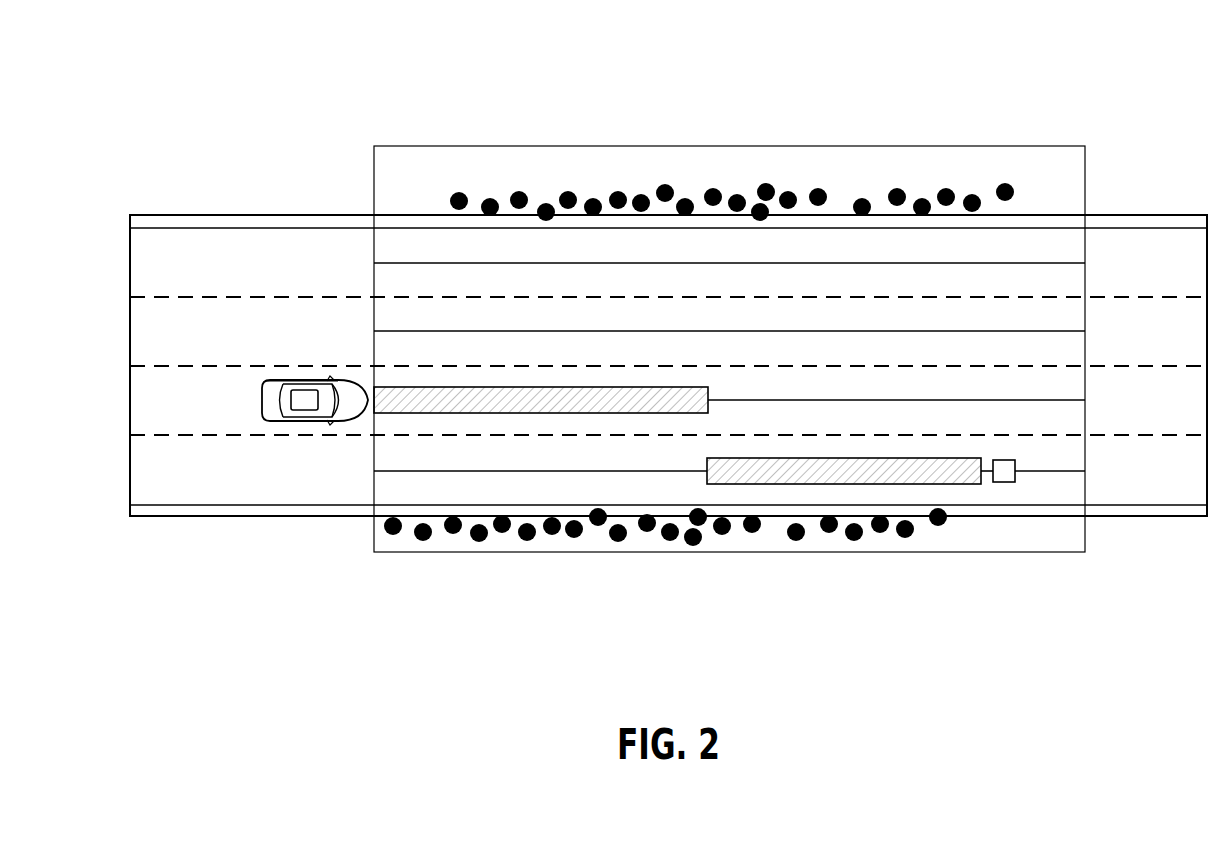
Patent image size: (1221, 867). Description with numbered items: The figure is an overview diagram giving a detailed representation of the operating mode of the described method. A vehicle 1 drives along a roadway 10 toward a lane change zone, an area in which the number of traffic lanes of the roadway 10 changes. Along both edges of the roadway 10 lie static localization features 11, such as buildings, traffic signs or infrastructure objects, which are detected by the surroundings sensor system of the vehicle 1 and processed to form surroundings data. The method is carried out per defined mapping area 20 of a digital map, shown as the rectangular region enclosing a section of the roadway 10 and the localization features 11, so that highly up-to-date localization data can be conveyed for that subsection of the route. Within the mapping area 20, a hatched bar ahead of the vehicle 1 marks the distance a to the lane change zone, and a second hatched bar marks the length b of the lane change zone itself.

The vehicle 1 is at (262, 398).
The roadway 10 is at (1173, 215).
The localization features 11 is at (459, 192).
The mapping area 20 is at (585, 146).
The distance to the lane change zone a is at (708, 393).
The length of the lane change zone b is at (707, 465).